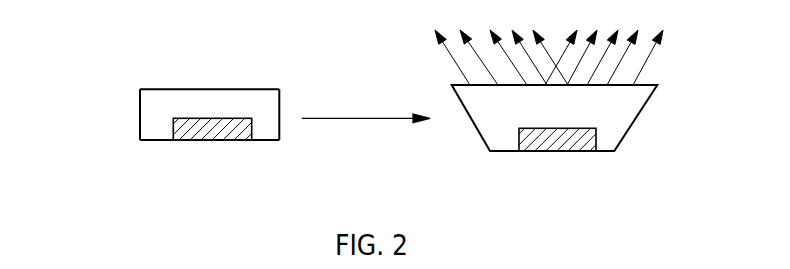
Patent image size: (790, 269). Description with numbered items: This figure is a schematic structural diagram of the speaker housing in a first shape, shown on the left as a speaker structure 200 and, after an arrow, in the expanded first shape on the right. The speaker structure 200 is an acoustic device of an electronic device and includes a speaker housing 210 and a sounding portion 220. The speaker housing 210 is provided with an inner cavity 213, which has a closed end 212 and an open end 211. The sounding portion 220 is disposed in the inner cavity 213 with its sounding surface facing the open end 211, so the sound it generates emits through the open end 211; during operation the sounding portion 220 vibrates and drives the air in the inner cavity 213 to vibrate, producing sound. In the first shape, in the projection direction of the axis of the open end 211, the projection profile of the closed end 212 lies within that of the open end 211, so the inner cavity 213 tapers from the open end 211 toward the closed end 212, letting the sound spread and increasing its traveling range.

The speaker structure 200 is at (160, 63).
The speaker housing 210 is at (140, 123).
The open end 211 is at (215, 89).
The closed end 212 is at (278, 140).
The inner cavity 213 is at (157, 132).
The sounding portion 220 is at (216, 135).